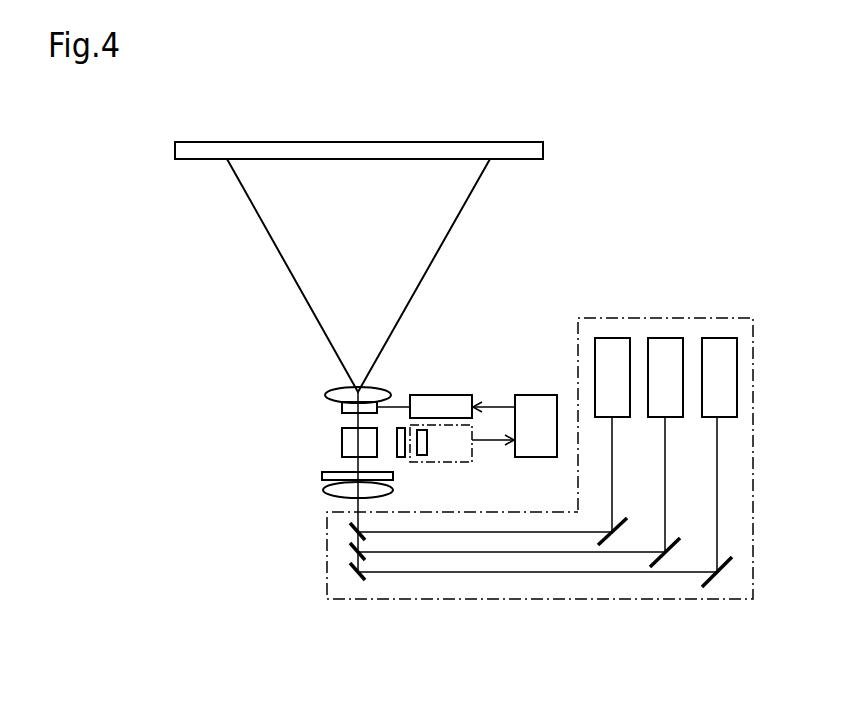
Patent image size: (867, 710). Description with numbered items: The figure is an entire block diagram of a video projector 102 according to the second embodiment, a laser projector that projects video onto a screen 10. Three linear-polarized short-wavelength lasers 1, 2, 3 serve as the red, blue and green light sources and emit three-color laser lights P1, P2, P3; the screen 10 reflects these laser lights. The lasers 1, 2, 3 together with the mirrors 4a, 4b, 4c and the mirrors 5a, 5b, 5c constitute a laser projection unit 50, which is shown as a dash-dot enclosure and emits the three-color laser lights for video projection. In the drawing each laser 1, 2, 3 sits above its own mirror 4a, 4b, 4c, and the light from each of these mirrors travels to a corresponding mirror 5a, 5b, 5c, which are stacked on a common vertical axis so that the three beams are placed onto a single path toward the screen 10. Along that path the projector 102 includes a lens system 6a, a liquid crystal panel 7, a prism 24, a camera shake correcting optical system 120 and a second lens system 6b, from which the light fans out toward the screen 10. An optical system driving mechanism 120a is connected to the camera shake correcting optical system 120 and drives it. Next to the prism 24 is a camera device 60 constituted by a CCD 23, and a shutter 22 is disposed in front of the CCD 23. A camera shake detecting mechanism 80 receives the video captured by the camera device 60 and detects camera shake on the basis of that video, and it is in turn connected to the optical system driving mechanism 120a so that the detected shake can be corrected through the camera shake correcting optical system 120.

The screen 10 is at (515, 142).
The video projector 102 is at (672, 180).
The lens system 6b is at (337, 391).
The camera shake correcting optical system 120 is at (342, 408).
The optical system driving mechanism 120a is at (465, 395).
The prism 24 is at (342, 439).
The liquid crystal panel 7 is at (322, 477).
The lens system 6a is at (328, 490).
The shutter 22 is at (400, 427).
The CCD 23 is at (428, 442).
The camera device 60 is at (472, 457).
The camera shake detecting mechanism 80 is at (533, 395).
The laser 1 is at (623, 338).
The laser 2 is at (677, 338).
The laser 3 is at (727, 338).
The laser projection unit 50 is at (753, 397).
The laser light P1 is at (612, 498).
The laser light P2 is at (665, 472).
The laser light P3 is at (717, 452).
The mirror 4a is at (610, 540).
The mirror 4b is at (662, 560).
The mirror 4c is at (713, 580).
The mirror 5a is at (352, 530).
The mirror 5b is at (350, 555).
The mirror 5c is at (354, 580).